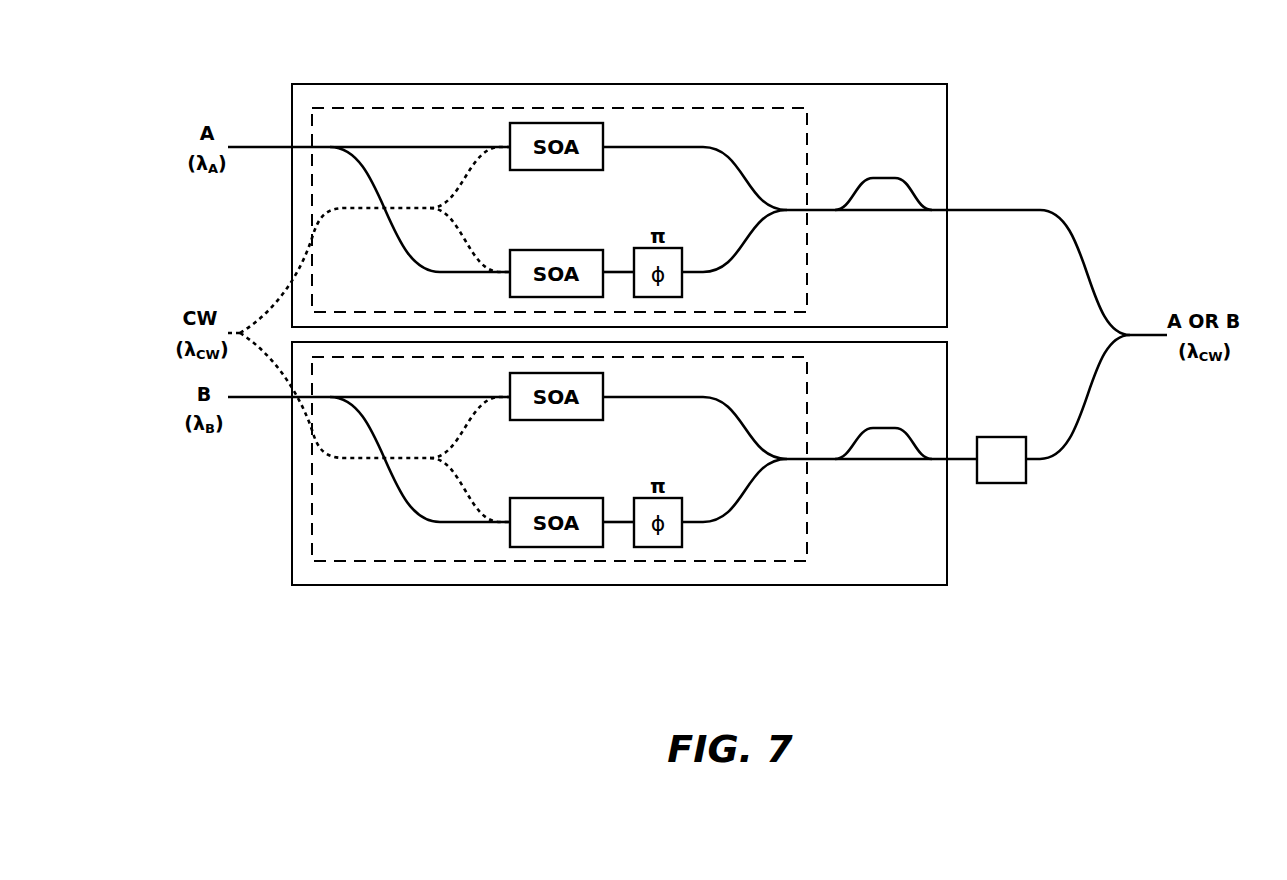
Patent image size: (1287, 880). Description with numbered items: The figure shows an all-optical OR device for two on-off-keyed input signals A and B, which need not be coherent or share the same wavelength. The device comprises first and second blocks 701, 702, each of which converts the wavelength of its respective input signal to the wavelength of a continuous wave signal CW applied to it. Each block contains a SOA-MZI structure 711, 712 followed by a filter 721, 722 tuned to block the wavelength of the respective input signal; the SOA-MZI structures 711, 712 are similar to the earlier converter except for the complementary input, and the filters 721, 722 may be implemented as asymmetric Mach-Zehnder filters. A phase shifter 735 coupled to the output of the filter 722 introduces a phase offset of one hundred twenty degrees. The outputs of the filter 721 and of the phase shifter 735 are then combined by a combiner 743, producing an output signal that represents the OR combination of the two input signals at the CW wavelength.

The first block 701 is at (532, 84).
The second block 702 is at (535, 585).
The SOA-MZI structure 711 is at (767, 108).
The SOA-MZI structure 712 is at (768, 561).
The filter 721 is at (890, 195).
The filter 722 is at (890, 445).
The phase shifter 735 is at (1005, 484).
The combiner 743 is at (1125, 328).